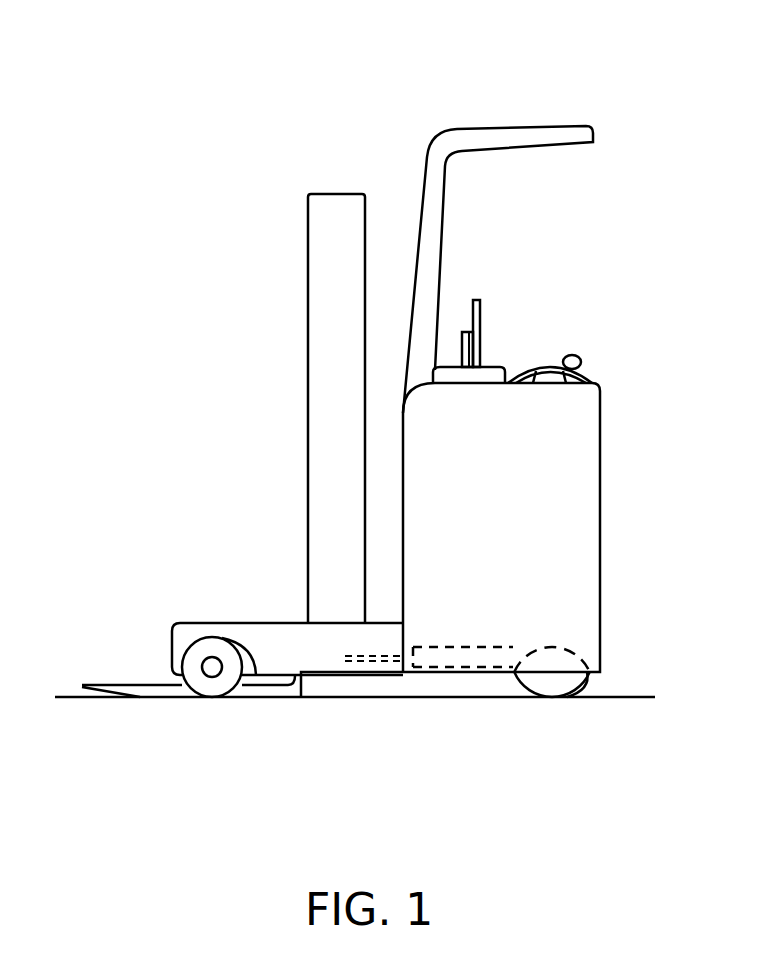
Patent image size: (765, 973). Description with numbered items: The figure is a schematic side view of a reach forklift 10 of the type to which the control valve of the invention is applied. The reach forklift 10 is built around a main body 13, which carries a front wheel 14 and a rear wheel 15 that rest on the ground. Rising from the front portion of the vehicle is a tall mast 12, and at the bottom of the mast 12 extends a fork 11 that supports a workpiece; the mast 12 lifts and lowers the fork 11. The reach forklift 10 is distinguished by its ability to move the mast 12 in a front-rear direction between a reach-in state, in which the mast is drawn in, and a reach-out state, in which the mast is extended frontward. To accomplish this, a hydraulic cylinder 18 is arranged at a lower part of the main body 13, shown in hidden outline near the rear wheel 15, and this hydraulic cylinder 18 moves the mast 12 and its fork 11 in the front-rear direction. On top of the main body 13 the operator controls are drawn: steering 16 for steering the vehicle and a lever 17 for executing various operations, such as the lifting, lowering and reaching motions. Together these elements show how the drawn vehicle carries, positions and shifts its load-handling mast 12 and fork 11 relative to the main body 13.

The reach forklift 10 is at (547, 88).
The fork 11 is at (142, 685).
The mast 12 is at (325, 398).
The main body 13 is at (573, 507).
The front wheel 14 is at (213, 677).
The rear wheel 15 is at (555, 683).
The steering 16 is at (540, 366).
The lever 17 is at (478, 327).
The hydraulic cylinder 18 is at (464, 648).